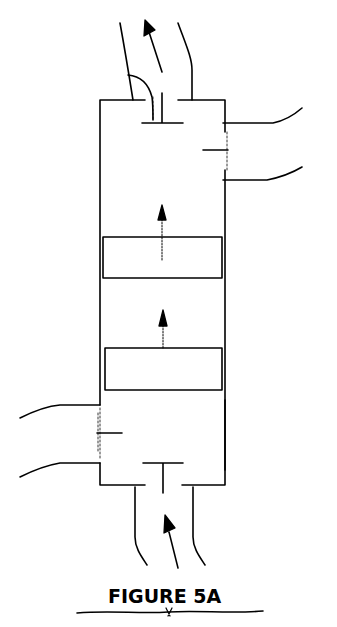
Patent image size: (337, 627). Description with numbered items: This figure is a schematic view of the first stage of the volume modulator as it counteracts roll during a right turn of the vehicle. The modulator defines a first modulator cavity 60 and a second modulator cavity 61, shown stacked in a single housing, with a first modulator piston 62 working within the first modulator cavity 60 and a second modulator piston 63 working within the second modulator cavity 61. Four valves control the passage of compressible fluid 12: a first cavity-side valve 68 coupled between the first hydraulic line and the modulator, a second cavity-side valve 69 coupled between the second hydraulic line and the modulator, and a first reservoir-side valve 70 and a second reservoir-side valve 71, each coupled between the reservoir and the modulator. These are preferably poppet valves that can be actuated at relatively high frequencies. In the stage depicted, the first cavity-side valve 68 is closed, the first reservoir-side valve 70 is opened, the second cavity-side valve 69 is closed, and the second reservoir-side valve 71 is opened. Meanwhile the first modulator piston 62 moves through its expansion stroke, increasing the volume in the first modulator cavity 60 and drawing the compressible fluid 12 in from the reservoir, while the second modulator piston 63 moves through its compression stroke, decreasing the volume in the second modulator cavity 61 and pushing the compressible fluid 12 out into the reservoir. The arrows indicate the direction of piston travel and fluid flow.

The compressible fluid 12 is at (140, 52).
The first modulator cavity 60 is at (223, 448).
The second modulator cavity 61 is at (100, 210).
The first modulator piston 62 is at (200, 373).
The second modulator piston 63 is at (125, 263).
The first cavity-side valve 68 is at (98, 450).
The second cavity-side valve 69 is at (228, 150).
The first reservoir-side valve 70 is at (170, 465).
The second reservoir-side valve 71 is at (128, 75).